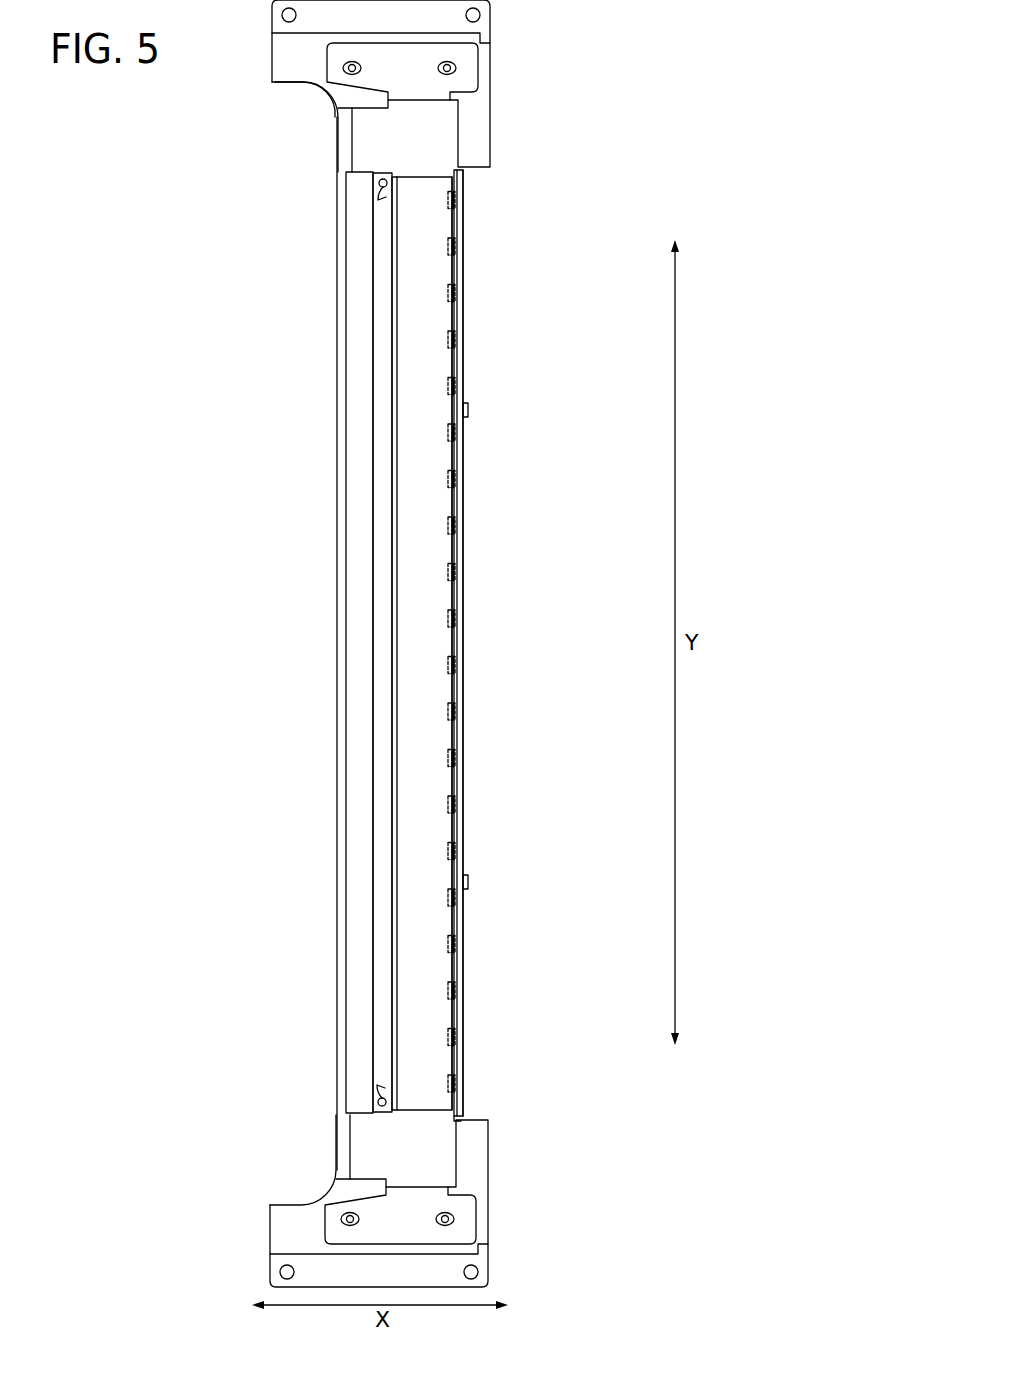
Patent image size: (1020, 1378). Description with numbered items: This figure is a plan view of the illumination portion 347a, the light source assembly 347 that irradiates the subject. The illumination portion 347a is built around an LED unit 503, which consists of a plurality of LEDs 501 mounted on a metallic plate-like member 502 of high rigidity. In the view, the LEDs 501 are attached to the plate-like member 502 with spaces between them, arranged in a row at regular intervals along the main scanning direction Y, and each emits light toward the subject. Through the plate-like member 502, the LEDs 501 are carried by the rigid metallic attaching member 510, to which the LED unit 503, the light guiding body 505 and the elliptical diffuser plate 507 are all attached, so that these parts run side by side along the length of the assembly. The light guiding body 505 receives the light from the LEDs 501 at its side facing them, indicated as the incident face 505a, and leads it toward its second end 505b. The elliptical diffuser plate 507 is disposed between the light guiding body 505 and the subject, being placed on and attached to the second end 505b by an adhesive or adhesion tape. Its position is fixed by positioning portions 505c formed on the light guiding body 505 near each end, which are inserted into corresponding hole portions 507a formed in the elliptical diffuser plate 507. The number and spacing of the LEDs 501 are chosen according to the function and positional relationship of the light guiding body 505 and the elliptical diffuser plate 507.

The light source unit 347 is at (582, 40).
The illumination portion 347a is at (608, 78).
The LEDs 501 is at (455, 333).
The plate-like member 502 is at (463, 600).
The LED unit 503 is at (475, 640).
The light guiding body 505 is at (437, 457).
The light incident face 505a is at (452, 505).
The second end of the light guiding body 505b is at (383, 507).
The positioning portions 505c is at (379, 183).
The elliptical diffuser plate 507 is at (380, 452).
The hole portions 507a is at (379, 192).
The attaching member 510 is at (339, 700).